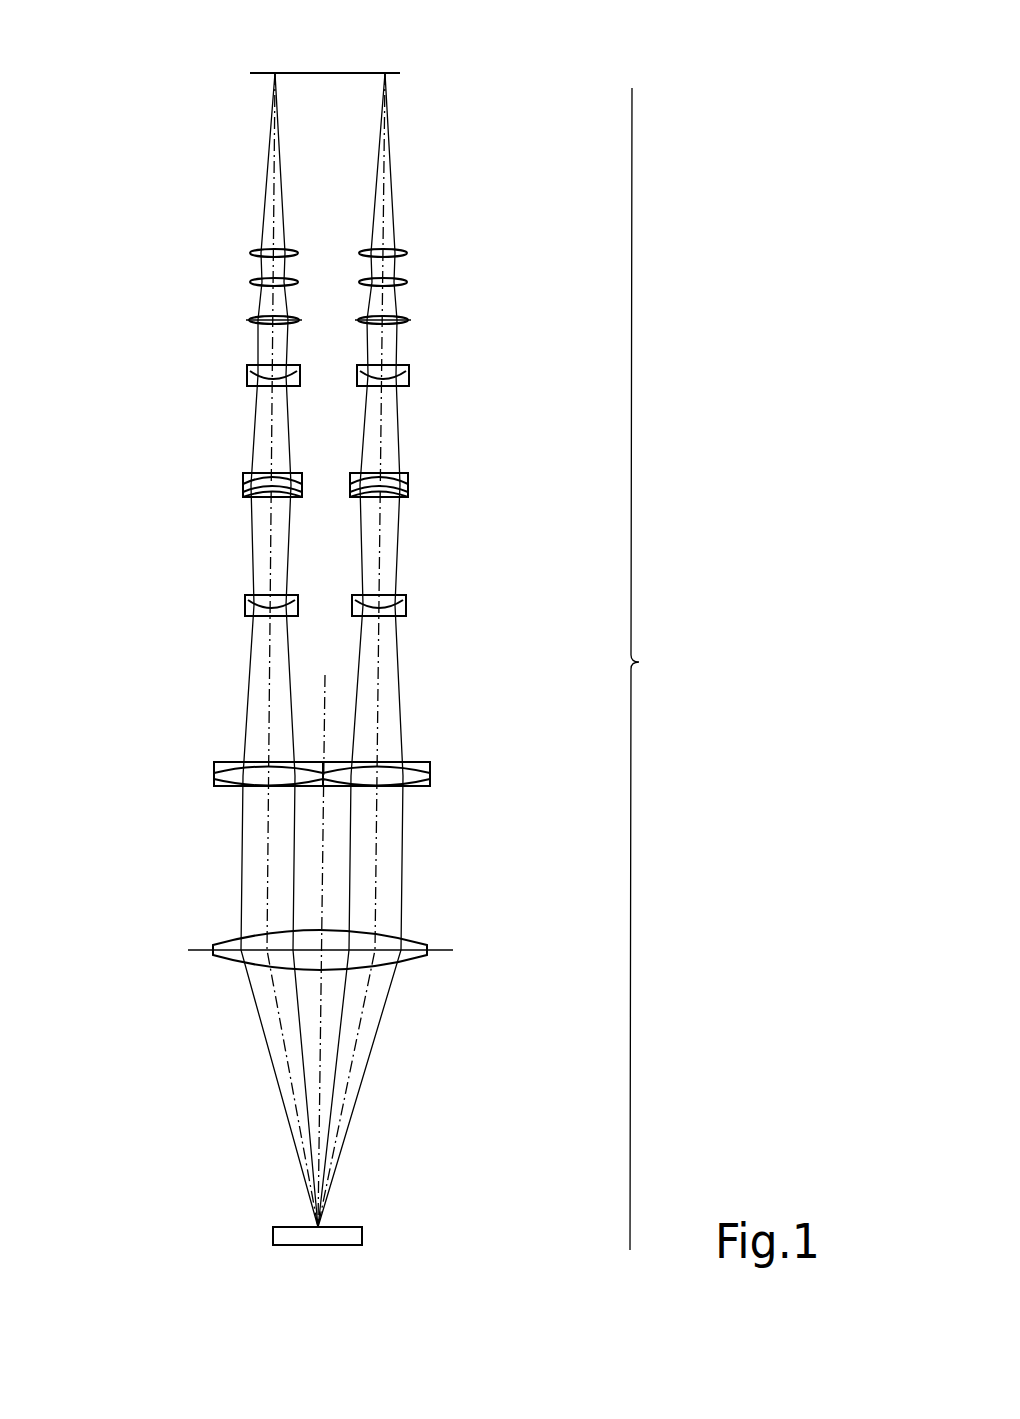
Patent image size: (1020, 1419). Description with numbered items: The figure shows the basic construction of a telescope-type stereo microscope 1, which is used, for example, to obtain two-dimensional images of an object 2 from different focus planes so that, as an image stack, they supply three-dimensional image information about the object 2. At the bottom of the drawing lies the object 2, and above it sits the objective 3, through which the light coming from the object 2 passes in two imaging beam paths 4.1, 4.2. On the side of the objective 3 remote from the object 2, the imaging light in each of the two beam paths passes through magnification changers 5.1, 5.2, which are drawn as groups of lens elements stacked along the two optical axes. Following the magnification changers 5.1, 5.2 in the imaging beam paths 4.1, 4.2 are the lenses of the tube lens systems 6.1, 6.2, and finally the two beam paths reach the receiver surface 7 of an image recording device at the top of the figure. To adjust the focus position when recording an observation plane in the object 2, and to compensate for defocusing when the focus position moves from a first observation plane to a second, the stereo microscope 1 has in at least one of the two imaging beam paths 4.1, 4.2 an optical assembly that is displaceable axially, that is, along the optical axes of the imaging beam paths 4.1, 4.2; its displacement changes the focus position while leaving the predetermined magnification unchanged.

The stereo microscope 1 is at (647, 669).
The object 2 is at (283, 1215).
The objective 3 is at (227, 958).
The imaging beam path 4.1 is at (392, 895).
The imaging beam path 4.2 is at (250, 895).
The magnification changer 5.1 is at (492, 362).
The magnification changer 5.2 is at (143, 355).
The tube lens system 6.1 is at (495, 222).
The tube lens system 6.2 is at (150, 222).
The receiver surface 7 is at (270, 45).